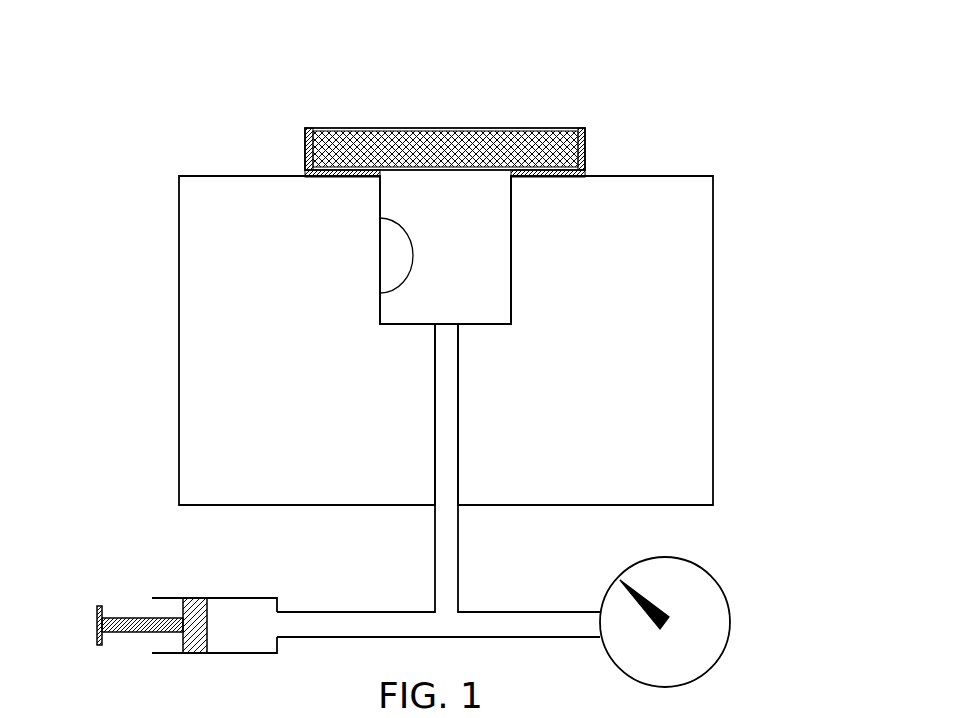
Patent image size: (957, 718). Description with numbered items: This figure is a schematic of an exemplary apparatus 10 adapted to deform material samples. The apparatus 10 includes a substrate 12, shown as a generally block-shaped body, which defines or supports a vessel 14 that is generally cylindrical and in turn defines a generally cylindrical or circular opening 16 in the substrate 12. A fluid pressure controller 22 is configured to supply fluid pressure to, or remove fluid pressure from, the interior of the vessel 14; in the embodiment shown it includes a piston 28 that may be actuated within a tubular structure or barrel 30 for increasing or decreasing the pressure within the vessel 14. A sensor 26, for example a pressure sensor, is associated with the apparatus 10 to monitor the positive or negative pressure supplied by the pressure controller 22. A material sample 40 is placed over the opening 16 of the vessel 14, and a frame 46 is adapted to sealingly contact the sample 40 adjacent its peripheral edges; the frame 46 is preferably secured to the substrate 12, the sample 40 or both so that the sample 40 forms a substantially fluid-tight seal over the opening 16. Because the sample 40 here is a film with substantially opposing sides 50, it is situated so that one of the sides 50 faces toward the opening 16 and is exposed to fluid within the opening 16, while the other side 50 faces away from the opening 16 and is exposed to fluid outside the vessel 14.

The apparatus 10 is at (740, 79).
The substrate 12 is at (687, 278).
The vessel 14 is at (379, 293).
The opening 16 is at (454, 240).
The fluid pressure controller 22 is at (169, 620).
The sensor 26 is at (742, 607).
The piston 28 is at (120, 618).
The barrel 30 is at (235, 597).
The material sample 40 is at (453, 127).
The frame 46 is at (303, 153).
The sides 50 is at (361, 127).